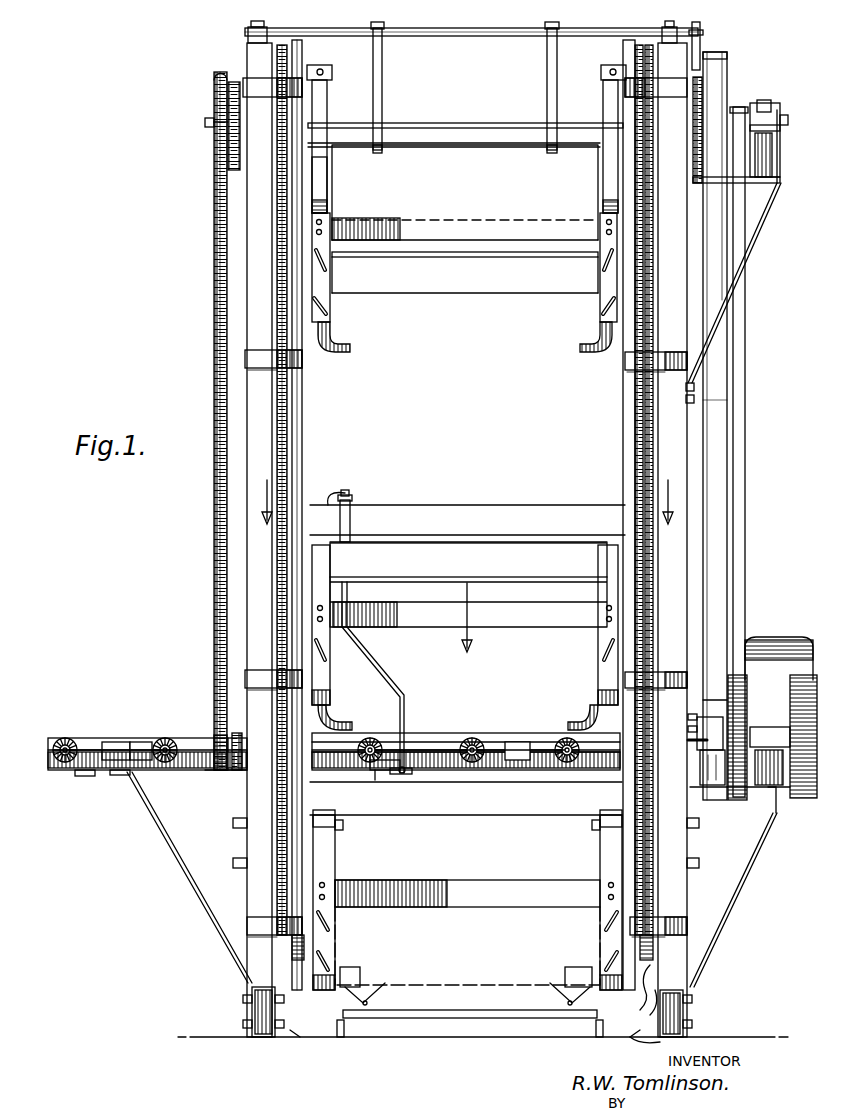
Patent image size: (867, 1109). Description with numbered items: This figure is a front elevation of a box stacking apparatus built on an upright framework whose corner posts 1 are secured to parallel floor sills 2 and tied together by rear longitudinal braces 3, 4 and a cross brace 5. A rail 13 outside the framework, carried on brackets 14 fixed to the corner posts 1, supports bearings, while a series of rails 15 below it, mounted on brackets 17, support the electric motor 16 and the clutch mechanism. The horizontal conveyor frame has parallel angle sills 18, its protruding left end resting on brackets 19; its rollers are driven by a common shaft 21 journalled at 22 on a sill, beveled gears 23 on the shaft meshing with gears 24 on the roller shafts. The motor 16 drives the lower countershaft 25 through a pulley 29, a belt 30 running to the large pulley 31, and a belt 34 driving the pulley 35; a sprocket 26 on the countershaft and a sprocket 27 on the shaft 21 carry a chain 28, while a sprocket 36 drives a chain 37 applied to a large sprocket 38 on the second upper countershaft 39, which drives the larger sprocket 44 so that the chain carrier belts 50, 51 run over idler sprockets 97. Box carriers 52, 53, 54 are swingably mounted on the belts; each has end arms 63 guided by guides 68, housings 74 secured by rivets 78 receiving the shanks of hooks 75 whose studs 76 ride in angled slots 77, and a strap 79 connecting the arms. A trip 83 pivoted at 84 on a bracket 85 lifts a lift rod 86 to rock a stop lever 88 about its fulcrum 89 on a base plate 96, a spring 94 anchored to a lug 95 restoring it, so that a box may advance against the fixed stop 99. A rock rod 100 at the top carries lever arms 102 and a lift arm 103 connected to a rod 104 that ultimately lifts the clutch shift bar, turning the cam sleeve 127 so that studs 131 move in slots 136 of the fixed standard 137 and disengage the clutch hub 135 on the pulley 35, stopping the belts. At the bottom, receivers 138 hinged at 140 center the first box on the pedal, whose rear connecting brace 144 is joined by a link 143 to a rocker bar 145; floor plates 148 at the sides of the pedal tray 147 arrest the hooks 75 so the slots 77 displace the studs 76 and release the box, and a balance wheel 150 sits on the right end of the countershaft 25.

The corner posts 1 is at (255, 398).
The floor sills 2 is at (252, 1010).
The rear longitudinal brace 3 is at (467, 514).
The rear longitudinal brace 4 is at (450, 258).
The cross brace 5 is at (475, 286).
The rail 13 is at (775, 165).
The brackets 14 is at (752, 258).
The rails 15 is at (710, 785).
The electric motor 16 is at (775, 640).
The brackets 17 is at (742, 878).
The angle sills 18 is at (178, 770).
The brackets 19 is at (188, 878).
The common shaft 21 is at (80, 775).
The journal 22 is at (515, 742).
The beveled gears 23 is at (565, 738).
The beveled gears 24 is at (72, 736).
The lower countershaft 25 is at (430, 740).
The sprocket 26 is at (222, 735).
The sprocket 27 is at (232, 772).
The chain 28 is at (228, 771).
The pulley 29 is at (705, 690).
The belt 30 is at (712, 398).
The large pulley 31 is at (722, 90).
The belt 34 is at (746, 471).
The pulley 35 is at (748, 682).
The sprocket 36 is at (230, 735).
The chain 37 is at (215, 543).
The large sprocket 38 is at (213, 96).
The second upper countershaft 39 is at (207, 124).
The sprocket 44 is at (228, 165).
The chain carrier belt 50 is at (638, 415).
The chain carrier belt 51 is at (288, 448).
The box carrier 52 is at (446, 218).
The box carrier 53 is at (522, 600).
The box carrier 54 is at (442, 882).
The end arms 63 is at (330, 190).
The guides 68 is at (337, 838).
The housings 74 is at (325, 240).
The hooks 75 is at (340, 348).
The studs 76 is at (332, 310).
The slots 77 is at (330, 292).
The rivets 78 is at (325, 222).
The strap 79 is at (480, 222).
The trip 83 is at (357, 489).
The pivot 84 is at (340, 488).
The bracket 85 is at (352, 525).
The lift rod 86 is at (350, 635).
The stop lever 88 is at (355, 775).
The fulcrum 89 is at (375, 780).
The spring 94 is at (404, 776).
The lug 95 is at (415, 780).
The base plate 96 is at (396, 784).
The idler sprockets 97 is at (277, 882).
The fixed stop 99 is at (600, 690).
The rock rod 100 is at (470, 20).
The lever arms 102 is at (383, 150).
The lift arm 103 is at (700, 42).
The rod 104 is at (703, 75).
The cam sleeve 127 is at (678, 708).
The studs 131 is at (685, 746).
The clutch hub 135 is at (723, 728).
The slots 136 is at (683, 738).
The fixed standard 137 is at (678, 722).
The receivers 138 is at (372, 985).
The hinges 140 is at (342, 1038).
The link 143 is at (660, 990).
The rear connecting brace 144 is at (690, 1040).
The rocker bar 145 is at (655, 970).
The pedal tray 147 is at (438, 1020).
The floor plates 148 is at (305, 1040).
The balance wheel 150 is at (808, 800).